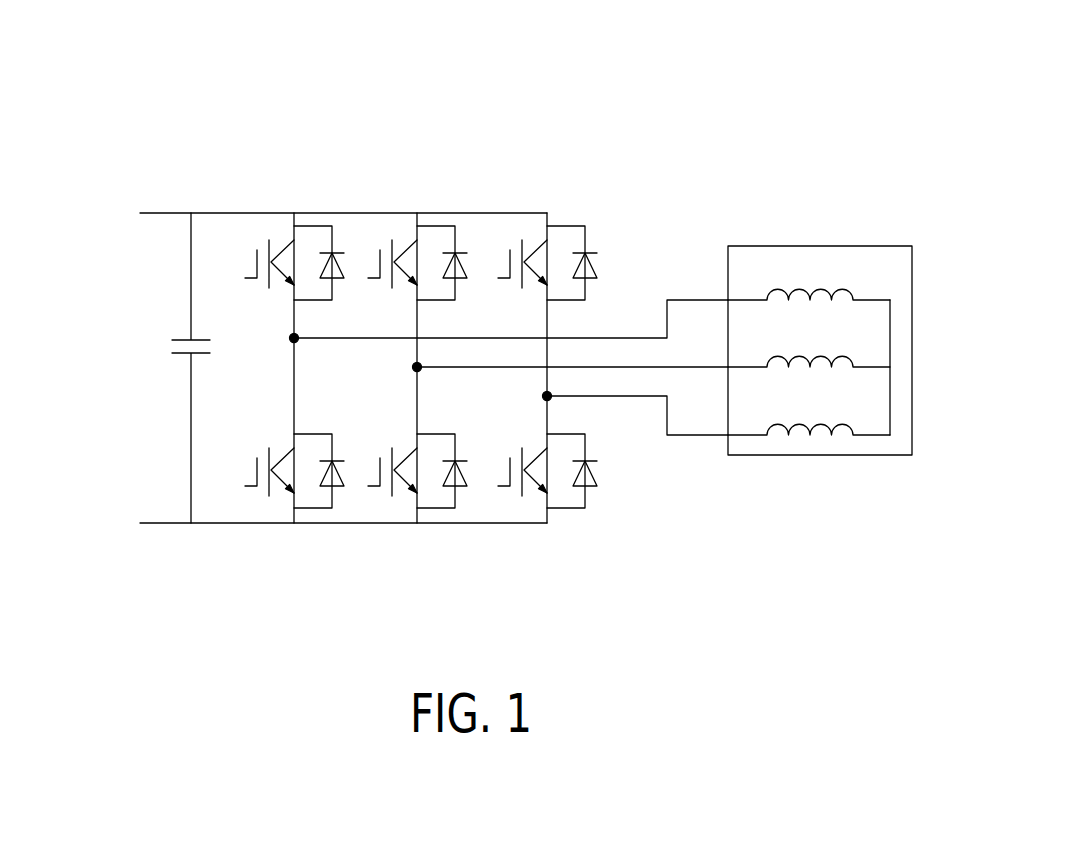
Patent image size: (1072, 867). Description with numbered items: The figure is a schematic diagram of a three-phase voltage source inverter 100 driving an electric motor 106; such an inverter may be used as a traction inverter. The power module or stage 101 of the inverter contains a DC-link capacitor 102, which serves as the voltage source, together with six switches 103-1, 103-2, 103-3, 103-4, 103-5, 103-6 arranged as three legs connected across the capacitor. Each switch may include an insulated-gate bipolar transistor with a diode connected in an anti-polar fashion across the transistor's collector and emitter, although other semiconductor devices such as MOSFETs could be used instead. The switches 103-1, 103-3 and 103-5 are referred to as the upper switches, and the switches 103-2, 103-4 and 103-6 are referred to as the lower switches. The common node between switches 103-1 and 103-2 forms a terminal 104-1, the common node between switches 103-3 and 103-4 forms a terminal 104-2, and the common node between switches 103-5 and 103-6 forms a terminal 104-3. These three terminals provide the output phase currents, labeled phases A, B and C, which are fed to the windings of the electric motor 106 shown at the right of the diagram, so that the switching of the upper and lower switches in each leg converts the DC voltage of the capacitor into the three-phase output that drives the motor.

The three-phase voltage source inverter 100 is at (1027, 73).
The power module 101 is at (378, 168).
The DC-link capacitor 102 is at (161, 368).
The switch 103-1 is at (283, 271).
The switch 103-2 is at (283, 463).
The switch 103-3 is at (407, 271).
The switch 103-4 is at (407, 462).
The switch 103-5 is at (537, 271).
The switch 103-6 is at (537, 462).
The terminal 104-1 is at (292, 341).
The terminal 104-2 is at (414, 368).
The terminal 104-3 is at (545, 395).
The electric motor 106 is at (820, 246).